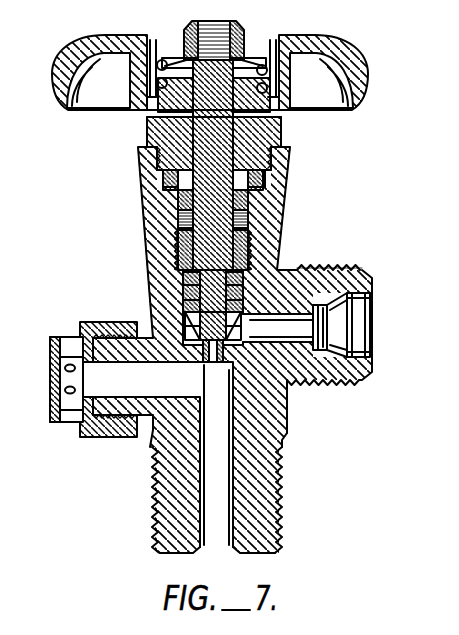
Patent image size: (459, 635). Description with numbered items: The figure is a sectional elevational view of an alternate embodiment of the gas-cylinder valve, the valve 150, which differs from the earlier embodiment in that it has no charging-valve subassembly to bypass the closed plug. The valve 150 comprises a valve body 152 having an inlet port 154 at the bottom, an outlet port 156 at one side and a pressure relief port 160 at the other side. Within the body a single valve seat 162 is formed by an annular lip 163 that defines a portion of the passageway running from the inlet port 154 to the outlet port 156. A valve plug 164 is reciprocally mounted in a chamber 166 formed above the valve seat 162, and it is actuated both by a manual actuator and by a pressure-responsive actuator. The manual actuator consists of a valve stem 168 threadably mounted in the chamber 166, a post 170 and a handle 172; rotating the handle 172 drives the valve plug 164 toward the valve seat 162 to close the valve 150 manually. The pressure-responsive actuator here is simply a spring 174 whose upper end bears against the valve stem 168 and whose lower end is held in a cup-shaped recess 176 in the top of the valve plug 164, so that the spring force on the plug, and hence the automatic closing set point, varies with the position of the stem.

The valve 150 is at (361, 131).
The valve body 152 is at (267, 202).
The inlet port 154 is at (215, 522).
The outlet port 156 is at (362, 325).
The pressure relief port 160 is at (83, 437).
The valve seat 162 is at (286, 418).
The annular lip 163 is at (288, 387).
The valve plug 164 is at (290, 272).
The chamber 166 is at (178, 221).
The valve stem 168 is at (237, 257).
The post 170 is at (203, 197).
The handle 172 is at (283, 35).
The spring 174 is at (183, 290).
The cup-shaped recess 176 is at (233, 275).